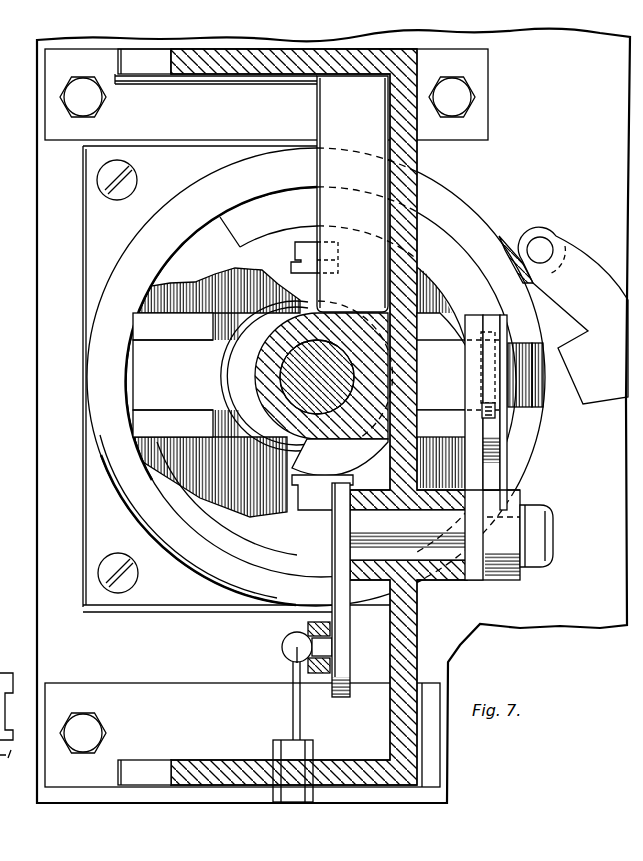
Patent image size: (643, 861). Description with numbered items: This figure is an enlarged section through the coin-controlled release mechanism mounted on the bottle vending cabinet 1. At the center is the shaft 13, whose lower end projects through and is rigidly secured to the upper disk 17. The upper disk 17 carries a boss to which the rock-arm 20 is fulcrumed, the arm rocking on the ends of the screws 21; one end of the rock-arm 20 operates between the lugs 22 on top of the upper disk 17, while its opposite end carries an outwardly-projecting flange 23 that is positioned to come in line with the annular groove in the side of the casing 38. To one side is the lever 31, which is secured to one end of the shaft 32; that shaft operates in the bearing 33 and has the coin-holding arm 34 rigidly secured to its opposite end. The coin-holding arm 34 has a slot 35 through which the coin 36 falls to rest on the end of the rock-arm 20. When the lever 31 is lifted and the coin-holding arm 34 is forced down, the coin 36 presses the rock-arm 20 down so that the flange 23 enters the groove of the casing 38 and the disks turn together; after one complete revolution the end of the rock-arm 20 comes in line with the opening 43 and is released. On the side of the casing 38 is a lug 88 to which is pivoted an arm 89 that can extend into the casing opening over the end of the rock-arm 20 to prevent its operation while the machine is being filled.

The bottle vending cabinet 1 is at (600, 630).
The shaft 13 is at (326, 345).
The upper disk 17 is at (247, 533).
The rock-arm 20 is at (193, 398).
The screws 21 is at (294, 252).
The lugs 22 is at (178, 318).
The outwardly-projecting flange 23 is at (527, 398).
The lever 31 is at (343, 617).
The shaft 32 is at (358, 526).
The bearing 33 is at (457, 581).
The coin-holding arm 34 is at (470, 373).
The slot 35 is at (482, 434).
The coin 36 is at (494, 418).
The casing 38 is at (538, 460).
The opening 43 is at (546, 382).
The lug 88 is at (546, 226).
The arm 89 is at (589, 272).